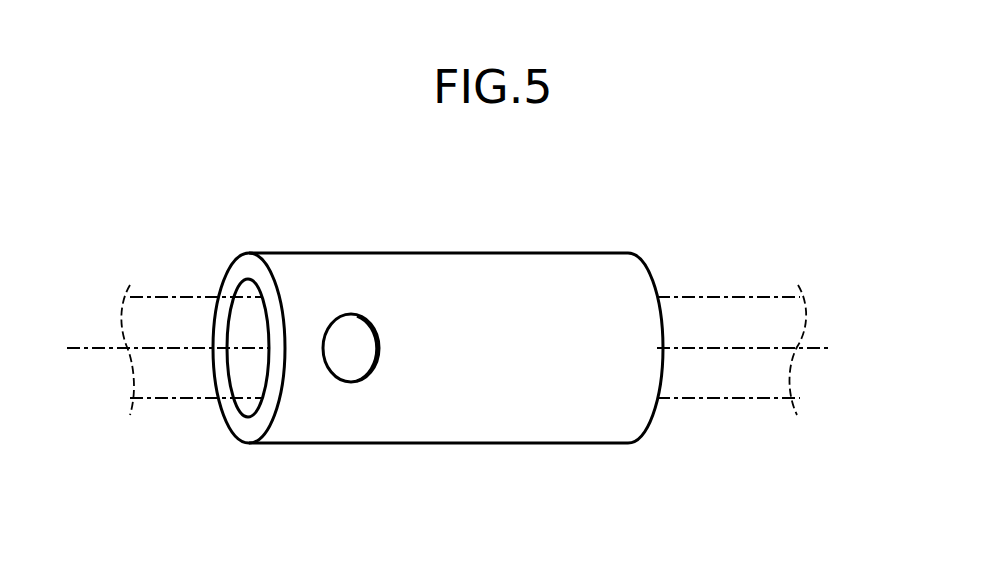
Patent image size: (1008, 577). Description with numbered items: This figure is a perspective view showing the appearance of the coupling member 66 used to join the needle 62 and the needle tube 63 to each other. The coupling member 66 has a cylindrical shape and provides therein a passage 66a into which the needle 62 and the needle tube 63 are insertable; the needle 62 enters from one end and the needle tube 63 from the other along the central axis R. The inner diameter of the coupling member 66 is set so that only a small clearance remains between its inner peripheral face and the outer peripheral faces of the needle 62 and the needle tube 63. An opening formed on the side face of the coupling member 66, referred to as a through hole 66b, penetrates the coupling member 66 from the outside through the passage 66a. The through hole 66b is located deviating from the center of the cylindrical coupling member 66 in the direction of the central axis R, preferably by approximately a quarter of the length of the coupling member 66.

The needle 62 is at (728, 302).
The needle tube 63 is at (168, 302).
The coupling member 66 is at (552, 263).
The passage 66a is at (240, 371).
The through hole 66b is at (345, 372).
The central axis R is at (460, 349).